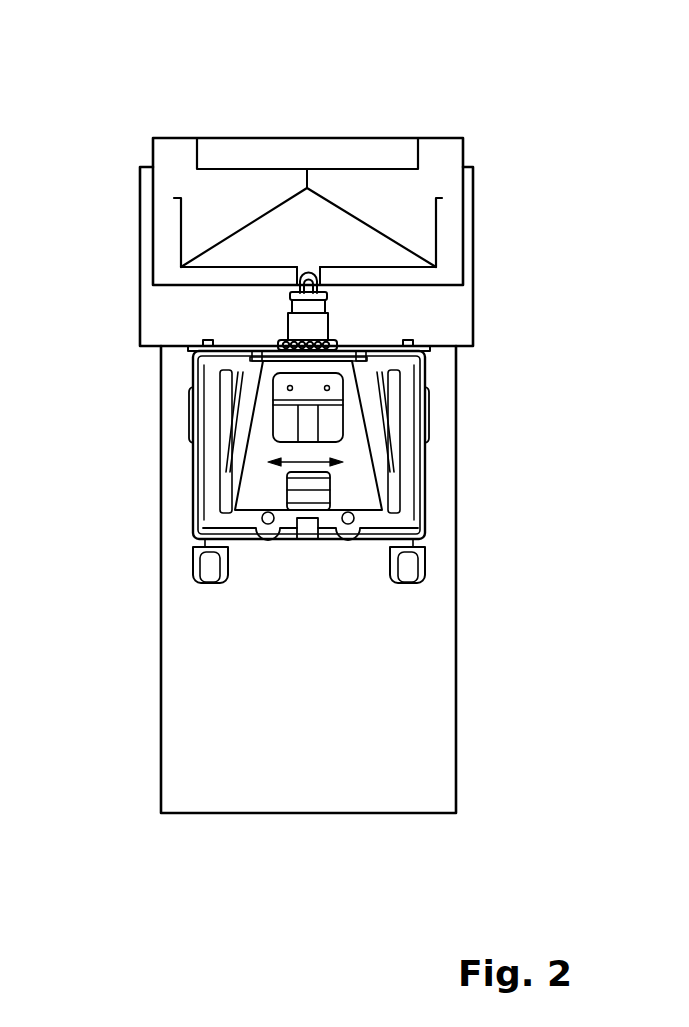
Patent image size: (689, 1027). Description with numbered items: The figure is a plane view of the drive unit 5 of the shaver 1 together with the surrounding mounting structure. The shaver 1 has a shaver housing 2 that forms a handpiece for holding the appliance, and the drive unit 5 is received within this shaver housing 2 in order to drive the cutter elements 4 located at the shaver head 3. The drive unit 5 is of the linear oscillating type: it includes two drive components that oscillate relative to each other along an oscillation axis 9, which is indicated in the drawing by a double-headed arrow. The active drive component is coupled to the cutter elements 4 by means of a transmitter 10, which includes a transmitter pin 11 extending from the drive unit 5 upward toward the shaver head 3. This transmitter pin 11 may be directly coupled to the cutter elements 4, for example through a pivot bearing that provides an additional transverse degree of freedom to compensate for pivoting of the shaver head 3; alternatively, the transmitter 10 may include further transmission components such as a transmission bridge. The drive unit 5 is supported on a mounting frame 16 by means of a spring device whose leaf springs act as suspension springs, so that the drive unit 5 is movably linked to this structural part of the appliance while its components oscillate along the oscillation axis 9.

The shaver 1 is at (494, 137).
The shaver housing 2 is at (161, 427).
The shaver head 3 is at (150, 215).
The cutter elements 4 is at (402, 154).
The drive unit 5 is at (448, 416).
The oscillation axis 9 is at (302, 472).
The transmitter 10 is at (365, 268).
The transmitter pin 11 is at (309, 181).
The mounting frame 16 is at (425, 562).